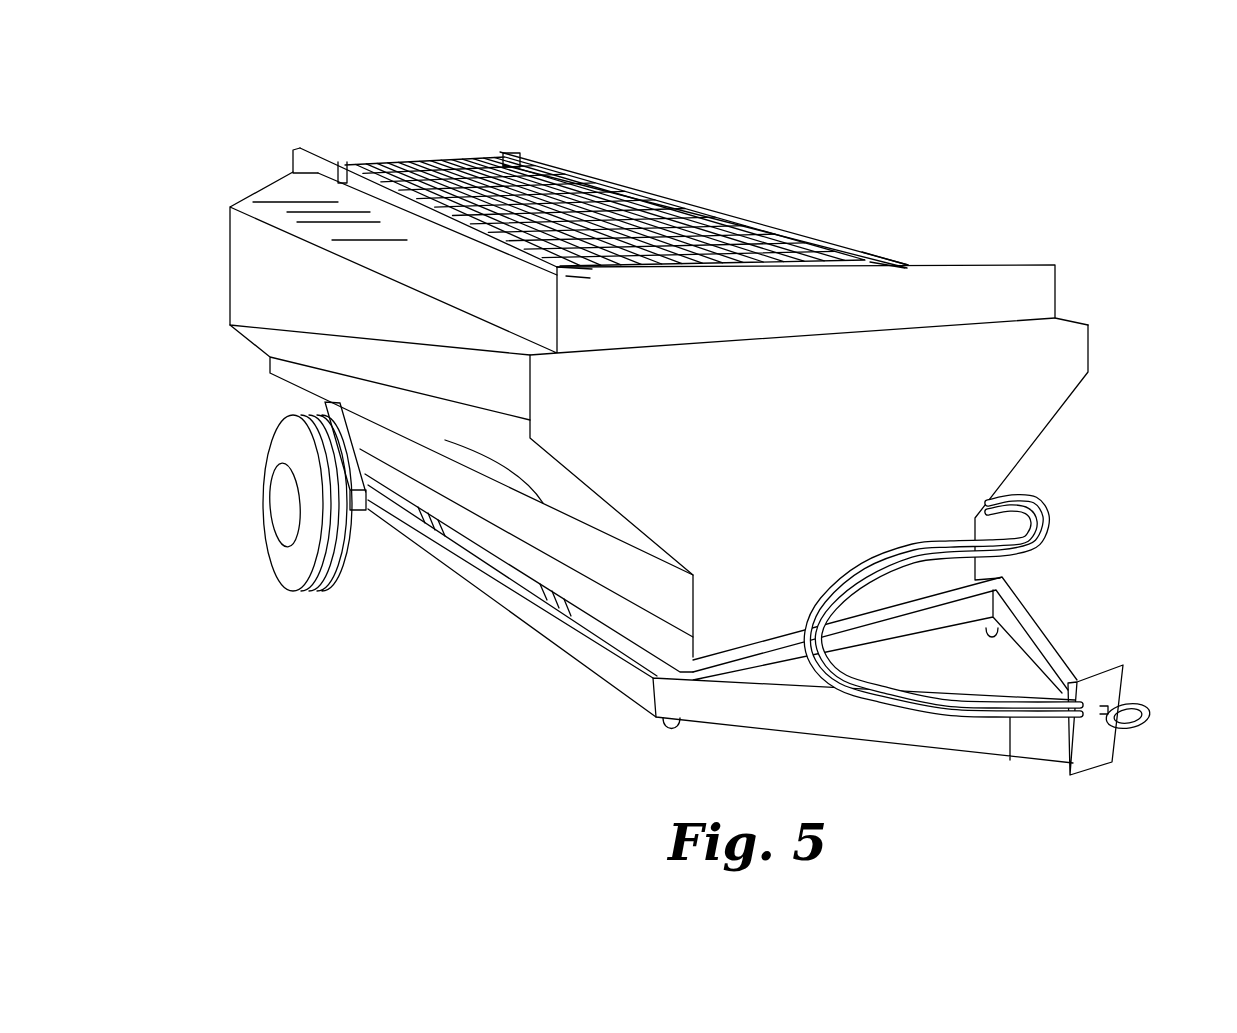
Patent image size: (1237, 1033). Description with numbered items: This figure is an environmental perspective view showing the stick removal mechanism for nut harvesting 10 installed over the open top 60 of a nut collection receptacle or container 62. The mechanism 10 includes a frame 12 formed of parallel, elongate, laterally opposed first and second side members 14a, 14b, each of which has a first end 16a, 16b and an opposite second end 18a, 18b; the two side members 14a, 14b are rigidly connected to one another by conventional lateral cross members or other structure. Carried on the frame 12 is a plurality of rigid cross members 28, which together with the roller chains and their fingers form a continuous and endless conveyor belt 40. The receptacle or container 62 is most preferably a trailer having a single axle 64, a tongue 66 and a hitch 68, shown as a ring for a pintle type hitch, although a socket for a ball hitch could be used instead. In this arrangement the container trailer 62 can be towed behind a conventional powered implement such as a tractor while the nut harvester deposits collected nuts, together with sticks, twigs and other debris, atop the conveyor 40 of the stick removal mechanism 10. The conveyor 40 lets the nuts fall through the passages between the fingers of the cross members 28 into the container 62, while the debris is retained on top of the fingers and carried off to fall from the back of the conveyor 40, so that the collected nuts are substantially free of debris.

The stick removal mechanism for nut harvesting 10 is at (267, 109).
The frame 12 is at (461, 246).
The first side member 14a is at (420, 215).
The second side member 14b is at (707, 206).
The first end 16a is at (587, 268).
The first end 16b is at (872, 253).
The second end 18a is at (315, 146).
The second end 18b is at (522, 157).
The cross members 28 is at (616, 207).
The conveyor belt 40 is at (737, 230).
The open top 60 is at (298, 201).
The nut collection receptacle or container 62 is at (842, 464).
The single axle 64 is at (367, 510).
The tongue 66 is at (962, 760).
The hitch 68 is at (1143, 706).